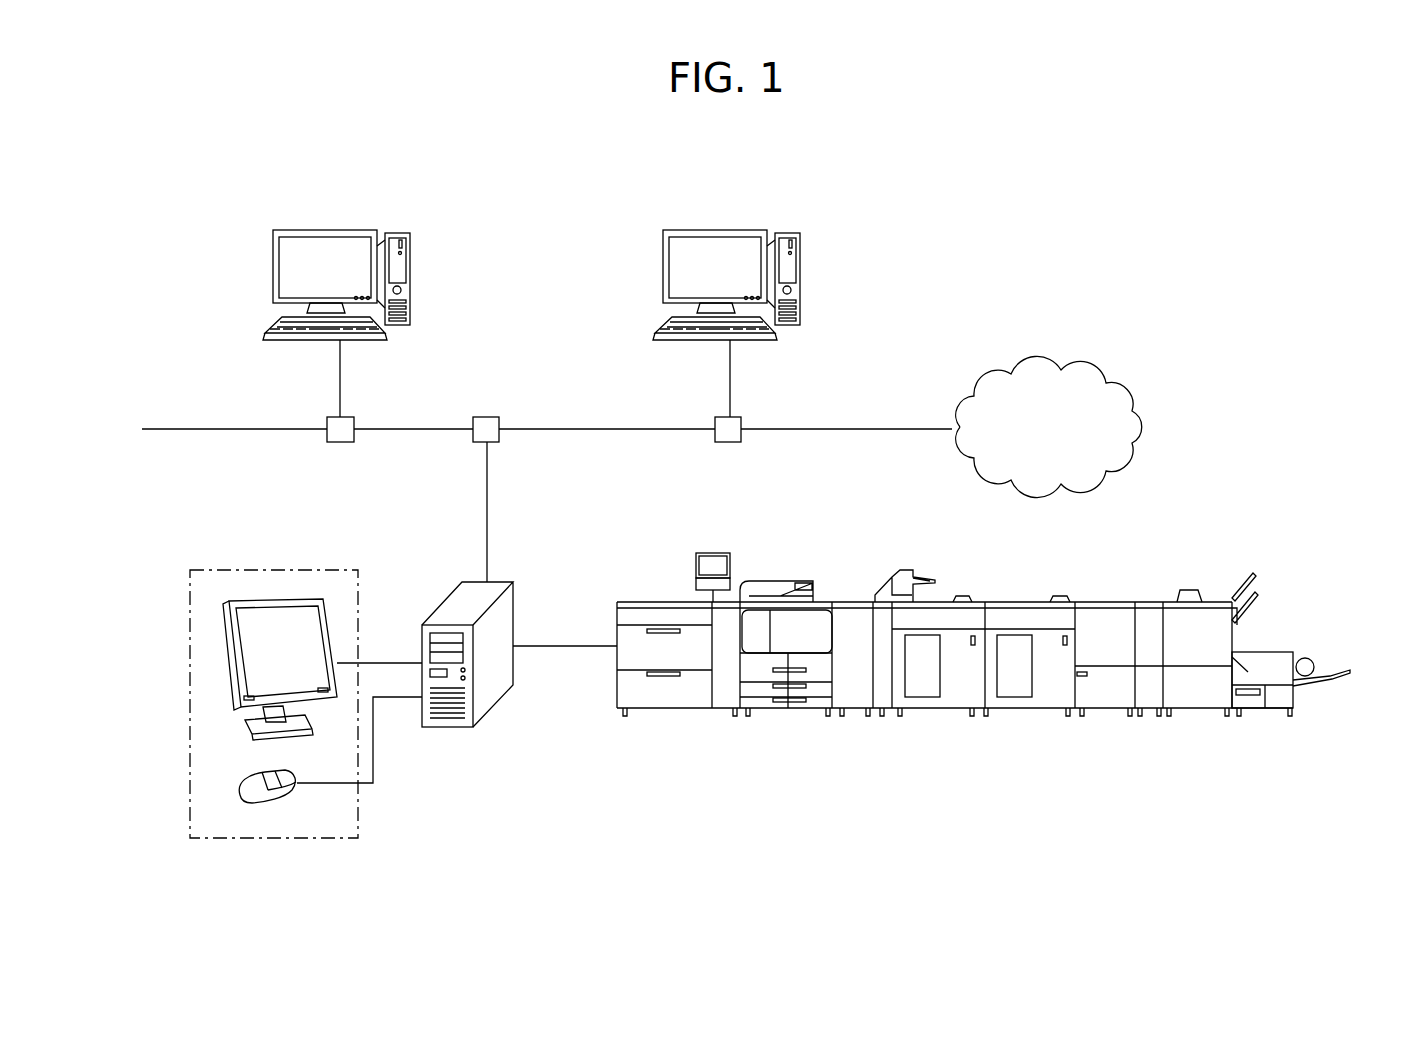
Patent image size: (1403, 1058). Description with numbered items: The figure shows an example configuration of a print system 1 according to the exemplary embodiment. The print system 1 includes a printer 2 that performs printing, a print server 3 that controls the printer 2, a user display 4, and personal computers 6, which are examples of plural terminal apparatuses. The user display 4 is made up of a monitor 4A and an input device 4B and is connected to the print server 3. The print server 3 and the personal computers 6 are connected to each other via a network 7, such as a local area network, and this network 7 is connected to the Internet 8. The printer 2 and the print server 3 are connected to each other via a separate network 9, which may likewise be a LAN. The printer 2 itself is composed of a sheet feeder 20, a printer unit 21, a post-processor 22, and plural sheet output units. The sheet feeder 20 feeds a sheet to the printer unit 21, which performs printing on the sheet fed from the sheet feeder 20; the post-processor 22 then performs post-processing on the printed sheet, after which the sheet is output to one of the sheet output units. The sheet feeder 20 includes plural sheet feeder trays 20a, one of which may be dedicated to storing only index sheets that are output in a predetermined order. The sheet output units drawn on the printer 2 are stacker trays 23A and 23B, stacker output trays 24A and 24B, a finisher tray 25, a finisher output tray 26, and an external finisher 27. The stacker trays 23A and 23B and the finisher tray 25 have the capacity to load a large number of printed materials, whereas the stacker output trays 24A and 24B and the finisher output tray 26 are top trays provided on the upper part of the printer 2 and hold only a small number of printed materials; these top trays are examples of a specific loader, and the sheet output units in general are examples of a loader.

The print system 1 is at (1042, 123).
The printer 2 is at (834, 550).
The print server 3 is at (463, 581).
The user display 4 is at (246, 710).
The monitor 4A is at (250, 602).
The input device 4B is at (240, 790).
The personal computers 6 is at (383, 235).
The network 7 is at (198, 429).
The Internet 8 is at (1110, 364).
The network 9 is at (548, 645).
The sheet feeder 20 is at (718, 659).
The sheet feeder trays 20a is at (637, 690).
The printer unit 21 is at (793, 620).
The post-processor 22 is at (1224, 652).
The stacker tray 23A is at (953, 695).
The stacker tray 23B is at (1047, 695).
The stacker output tray 24A is at (935, 613).
The stacker output tray 24B is at (1010, 613).
The finisher tray 25 is at (1250, 623).
The finisher output tray 26 is at (1238, 583).
The external finisher 27 is at (1282, 668).